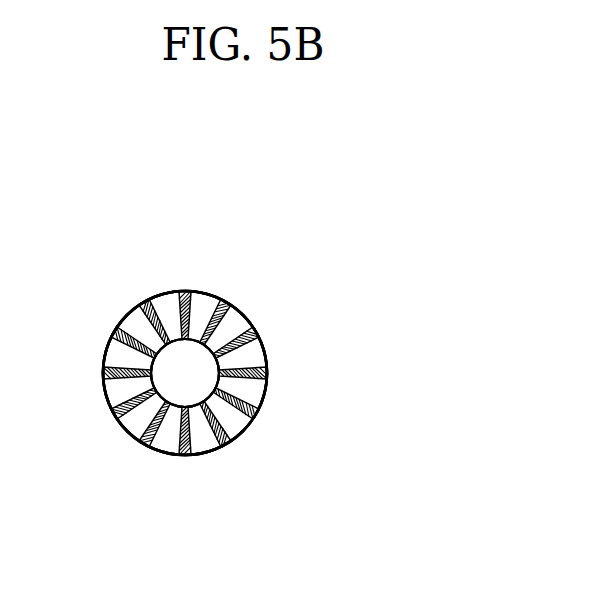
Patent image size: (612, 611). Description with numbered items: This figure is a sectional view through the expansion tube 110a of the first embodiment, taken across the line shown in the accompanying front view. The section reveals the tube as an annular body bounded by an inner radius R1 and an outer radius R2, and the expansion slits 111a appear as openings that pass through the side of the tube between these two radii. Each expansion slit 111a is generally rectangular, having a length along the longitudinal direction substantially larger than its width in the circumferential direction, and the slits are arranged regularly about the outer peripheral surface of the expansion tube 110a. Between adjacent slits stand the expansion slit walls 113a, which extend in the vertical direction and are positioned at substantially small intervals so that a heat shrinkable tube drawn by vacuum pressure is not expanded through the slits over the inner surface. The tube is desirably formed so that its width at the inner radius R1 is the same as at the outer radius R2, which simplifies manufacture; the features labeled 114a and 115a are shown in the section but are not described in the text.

The expansion tube 110a is at (267, 230).
The expansion slit 111a is at (255, 360).
The expansion slit wall 113a is at (267, 373).
The inner core 114a is at (168, 412).
The outer ring 115a is at (130, 316).
The inner radius R1 is at (216, 384).
The outer radius R2 is at (206, 455).